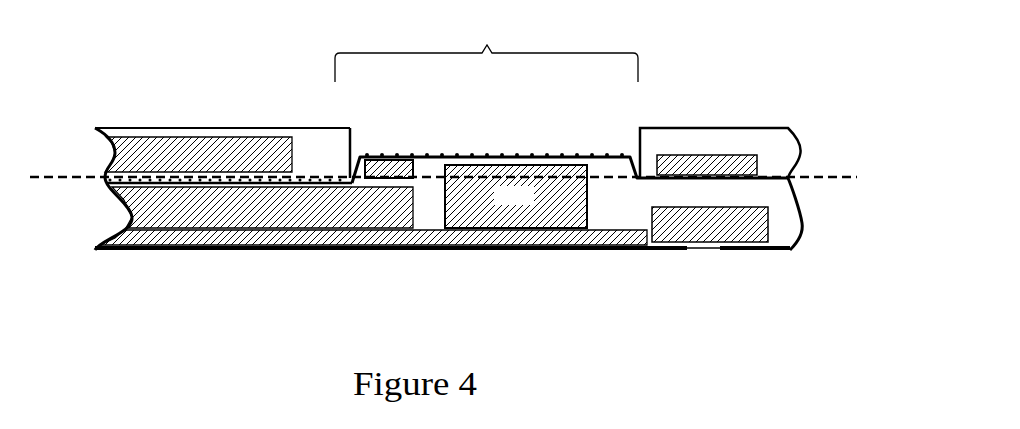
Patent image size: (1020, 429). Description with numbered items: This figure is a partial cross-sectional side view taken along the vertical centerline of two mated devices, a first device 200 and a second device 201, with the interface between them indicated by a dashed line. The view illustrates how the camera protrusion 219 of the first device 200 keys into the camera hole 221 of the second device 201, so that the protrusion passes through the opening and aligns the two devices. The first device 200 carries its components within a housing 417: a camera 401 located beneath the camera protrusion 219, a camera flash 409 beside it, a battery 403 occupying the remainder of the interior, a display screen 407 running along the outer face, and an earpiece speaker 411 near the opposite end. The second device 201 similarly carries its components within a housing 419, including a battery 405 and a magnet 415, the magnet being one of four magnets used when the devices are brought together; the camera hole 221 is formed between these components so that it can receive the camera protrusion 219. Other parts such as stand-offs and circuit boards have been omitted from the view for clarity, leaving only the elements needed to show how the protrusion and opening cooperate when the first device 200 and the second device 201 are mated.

The first device 200 is at (613, 290).
The second device 201 is at (723, 76).
The camera protrusion 219 is at (607, 173).
The camera hole 221 is at (486, 49).
The camera 401 is at (516, 196).
The battery 403 is at (130, 218).
The battery 405 is at (110, 153).
The display screen 407 is at (103, 240).
The camera flash 409 is at (402, 158).
The earpiece speaker 411 is at (758, 217).
The magnet 415 is at (758, 158).
The housing 417 is at (755, 251).
The housing 419 is at (200, 117).